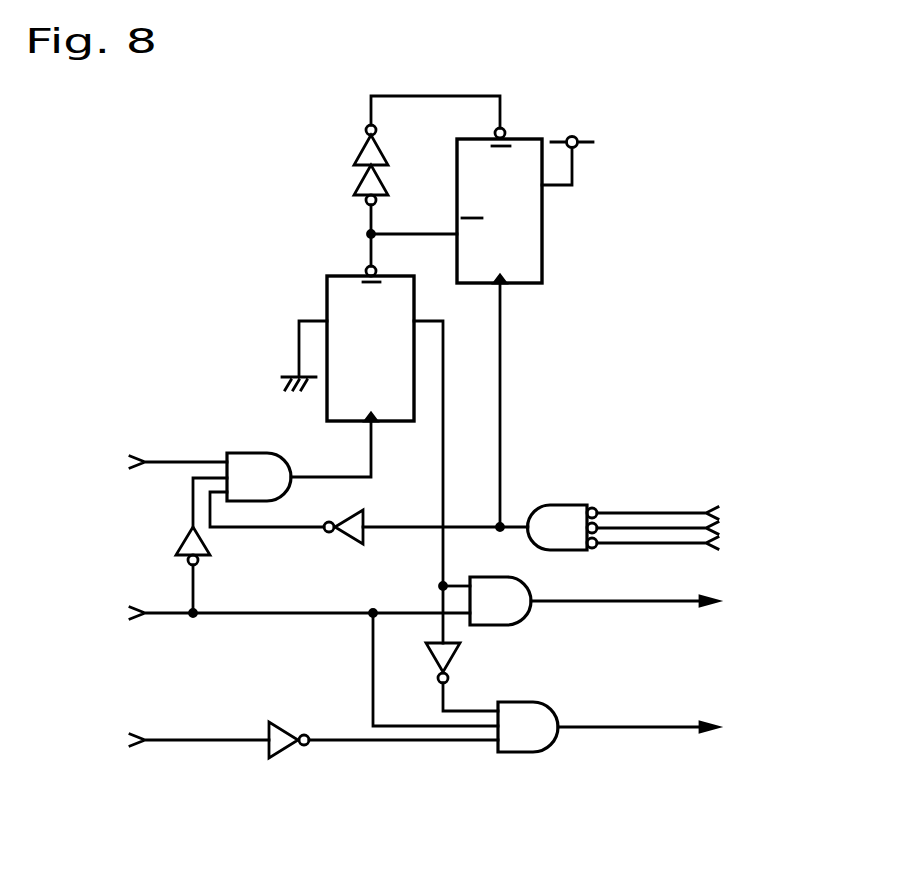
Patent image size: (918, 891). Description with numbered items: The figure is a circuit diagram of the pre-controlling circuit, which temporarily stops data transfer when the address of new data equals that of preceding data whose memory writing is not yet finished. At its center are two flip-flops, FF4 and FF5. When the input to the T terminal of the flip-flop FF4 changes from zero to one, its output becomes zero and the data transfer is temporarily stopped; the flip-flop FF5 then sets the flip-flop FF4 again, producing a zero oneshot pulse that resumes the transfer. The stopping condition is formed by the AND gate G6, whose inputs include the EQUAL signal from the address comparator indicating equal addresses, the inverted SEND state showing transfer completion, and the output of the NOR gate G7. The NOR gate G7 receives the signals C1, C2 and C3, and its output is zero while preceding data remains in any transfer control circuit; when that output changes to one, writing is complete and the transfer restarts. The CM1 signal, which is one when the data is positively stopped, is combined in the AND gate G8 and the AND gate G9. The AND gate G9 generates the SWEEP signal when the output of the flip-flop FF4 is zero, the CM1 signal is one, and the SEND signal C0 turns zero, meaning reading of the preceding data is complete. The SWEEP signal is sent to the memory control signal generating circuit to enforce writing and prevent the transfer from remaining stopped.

The AND gate with three input terminals G6 is at (259, 464).
The NOR gate with three input terminals G7 is at (563, 513).
The AND gate G8 is at (500, 588).
The AND gate with three input terminals G9 is at (528, 714).
The flip-flop FF4 is at (383, 334).
The flip-flop FF5 is at (525, 197).
The EQUAL input signal EQUAL is at (129, 462).
The CM1 signal CM1 is at (271, 613).
The SEND signal C0 is at (180, 738).
The C1 input signal C1 is at (678, 507).
The C2 input signal C2 is at (678, 532).
The C3 input signal C3 is at (678, 554).
The SWEEP signal SWEEP is at (690, 732).